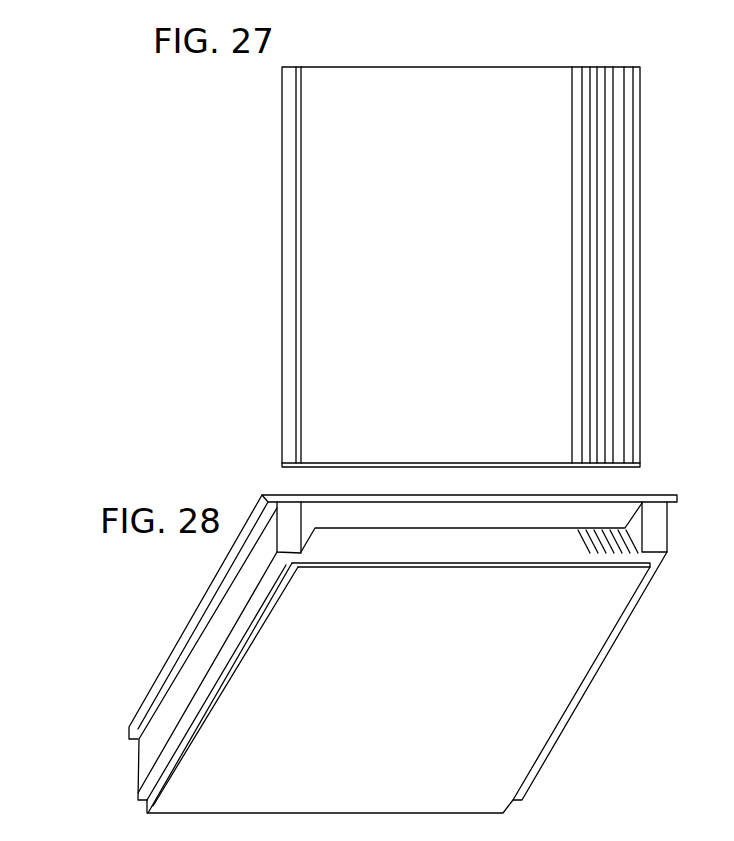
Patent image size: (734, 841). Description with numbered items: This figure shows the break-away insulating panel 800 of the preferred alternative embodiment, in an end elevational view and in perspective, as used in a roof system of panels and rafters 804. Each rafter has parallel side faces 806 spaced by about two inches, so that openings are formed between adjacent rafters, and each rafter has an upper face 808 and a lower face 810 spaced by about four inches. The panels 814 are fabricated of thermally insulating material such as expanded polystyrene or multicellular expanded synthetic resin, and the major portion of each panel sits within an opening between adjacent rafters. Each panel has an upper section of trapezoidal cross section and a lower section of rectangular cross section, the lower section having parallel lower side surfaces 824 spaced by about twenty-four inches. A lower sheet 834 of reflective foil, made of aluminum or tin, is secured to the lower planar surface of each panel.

In FIG. 27, the insulating panel 800 is at (133, 113).
In FIG. 28, the rafters 804 is at (290, 520).
In FIG. 28, the parallel side faces 806 is at (200, 657).
In FIG. 28, the upper face 808 is at (262, 527).
In FIG. 28, the lower face 810 is at (137, 803).
In FIG. 28, the panels 814 is at (565, 551).
In FIG. 28, the lower side surfaces 824 is at (192, 732).
In FIG. 28, the lower sheet of reflective foil 834 is at (532, 638).